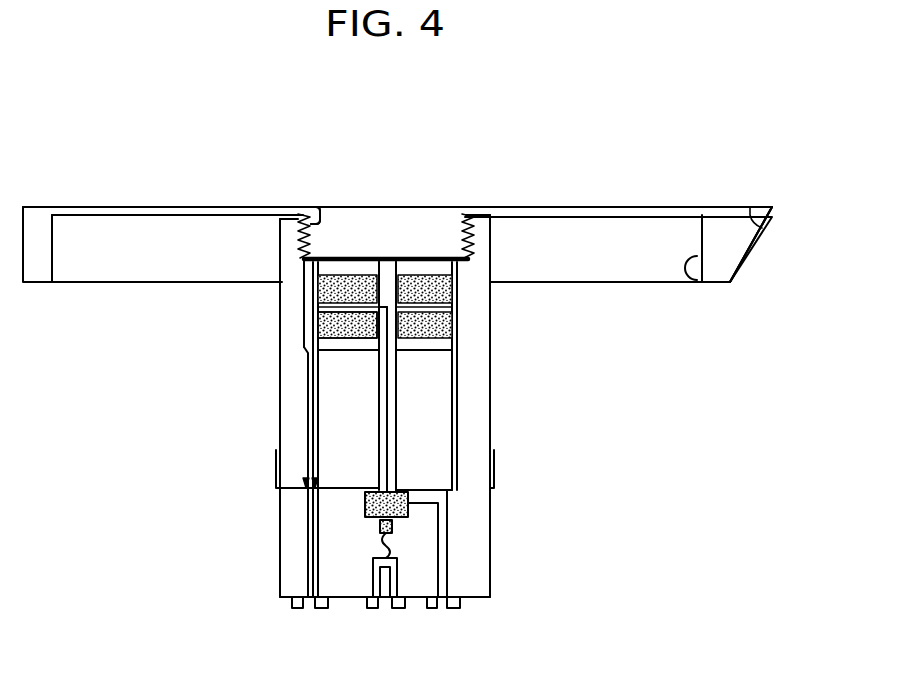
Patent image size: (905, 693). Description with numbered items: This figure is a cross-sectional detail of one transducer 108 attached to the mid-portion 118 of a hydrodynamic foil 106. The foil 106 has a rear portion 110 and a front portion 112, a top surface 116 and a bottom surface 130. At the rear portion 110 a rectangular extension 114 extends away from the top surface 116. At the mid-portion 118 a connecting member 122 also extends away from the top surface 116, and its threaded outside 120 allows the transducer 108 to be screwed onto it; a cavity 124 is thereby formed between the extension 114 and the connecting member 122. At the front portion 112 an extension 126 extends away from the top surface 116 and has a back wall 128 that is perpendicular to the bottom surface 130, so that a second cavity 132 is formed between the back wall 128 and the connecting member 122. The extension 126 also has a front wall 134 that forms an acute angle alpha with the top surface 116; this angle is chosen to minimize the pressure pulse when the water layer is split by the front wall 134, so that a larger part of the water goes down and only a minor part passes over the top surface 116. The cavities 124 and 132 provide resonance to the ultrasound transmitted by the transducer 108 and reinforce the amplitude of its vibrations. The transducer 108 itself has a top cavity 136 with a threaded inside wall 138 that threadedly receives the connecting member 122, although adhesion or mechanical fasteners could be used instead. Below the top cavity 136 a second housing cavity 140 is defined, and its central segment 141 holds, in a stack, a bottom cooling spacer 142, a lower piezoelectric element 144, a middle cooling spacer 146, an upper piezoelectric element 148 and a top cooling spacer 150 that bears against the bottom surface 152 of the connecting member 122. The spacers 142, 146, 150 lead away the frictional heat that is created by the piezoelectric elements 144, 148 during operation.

The hydrodynamic foil 106 is at (205, 210).
The transducer 108 is at (453, 407).
The rear portion 110 is at (60, 207).
The front portion 112 is at (735, 205).
The rectangular extension 114 is at (38, 245).
The top surface 116 is at (257, 207).
The mid-portion 118 is at (381, 207).
The threaded outside 120 is at (315, 217).
The connecting member 122 is at (437, 230).
The cavity 124 is at (167, 252).
The extension 126 is at (727, 236).
The back wall 128 is at (691, 282).
The bottom surface 130 is at (590, 215).
The cavity 132 is at (638, 255).
The front wall 134 is at (745, 257).
The top cavity 136 is at (305, 265).
The threaded inside wall 138 is at (302, 243).
The second housing cavity 140 is at (323, 327).
The central segment 141 is at (386, 272).
The bottom cooling spacer 142 is at (427, 345).
The lower piezoelectric element 144 is at (455, 317).
The middle cooling spacer 146 is at (442, 307).
The upper piezoelectric element 148 is at (443, 284).
The top cooling spacer 150 is at (365, 267).
The bottom surface 152 is at (407, 255).